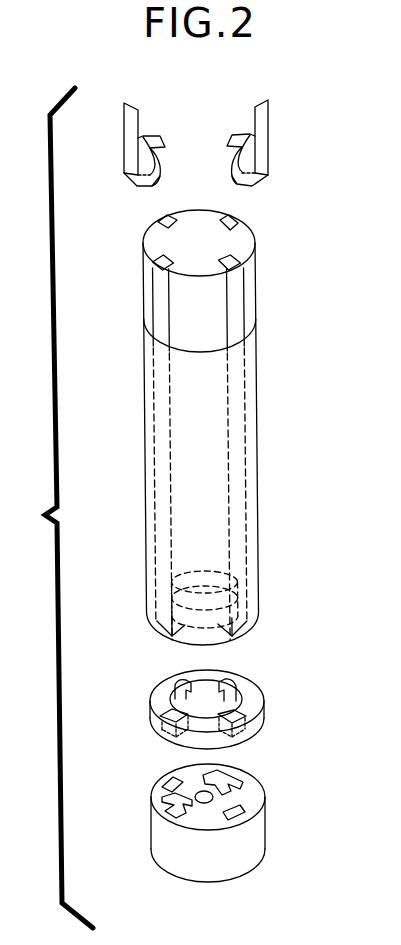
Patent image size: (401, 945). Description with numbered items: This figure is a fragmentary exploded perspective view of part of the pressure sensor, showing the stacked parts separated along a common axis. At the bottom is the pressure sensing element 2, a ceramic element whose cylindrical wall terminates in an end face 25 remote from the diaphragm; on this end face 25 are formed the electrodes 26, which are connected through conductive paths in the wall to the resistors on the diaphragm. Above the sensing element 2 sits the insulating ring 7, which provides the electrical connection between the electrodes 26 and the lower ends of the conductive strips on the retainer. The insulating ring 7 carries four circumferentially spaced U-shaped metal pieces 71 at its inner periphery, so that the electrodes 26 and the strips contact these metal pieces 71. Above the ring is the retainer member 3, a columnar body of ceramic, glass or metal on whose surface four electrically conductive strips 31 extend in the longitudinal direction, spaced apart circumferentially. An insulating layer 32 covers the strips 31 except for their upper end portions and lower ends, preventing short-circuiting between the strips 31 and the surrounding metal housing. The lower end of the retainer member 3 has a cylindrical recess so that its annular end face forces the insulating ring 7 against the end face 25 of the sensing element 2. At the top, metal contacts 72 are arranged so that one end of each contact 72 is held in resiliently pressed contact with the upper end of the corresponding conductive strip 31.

The pressure sensing element 2 is at (176, 836).
The retainer member 3 is at (185, 422).
The insulating ring 7 is at (191, 700).
The end face 25 is at (207, 818).
The electrodes 26 is at (170, 781).
The electrically conductive strips 31 is at (196, 242).
The insulating layer 32 is at (141, 374).
The U-shaped metal pieces 71 is at (187, 680).
The metal contacts 72 is at (128, 139).